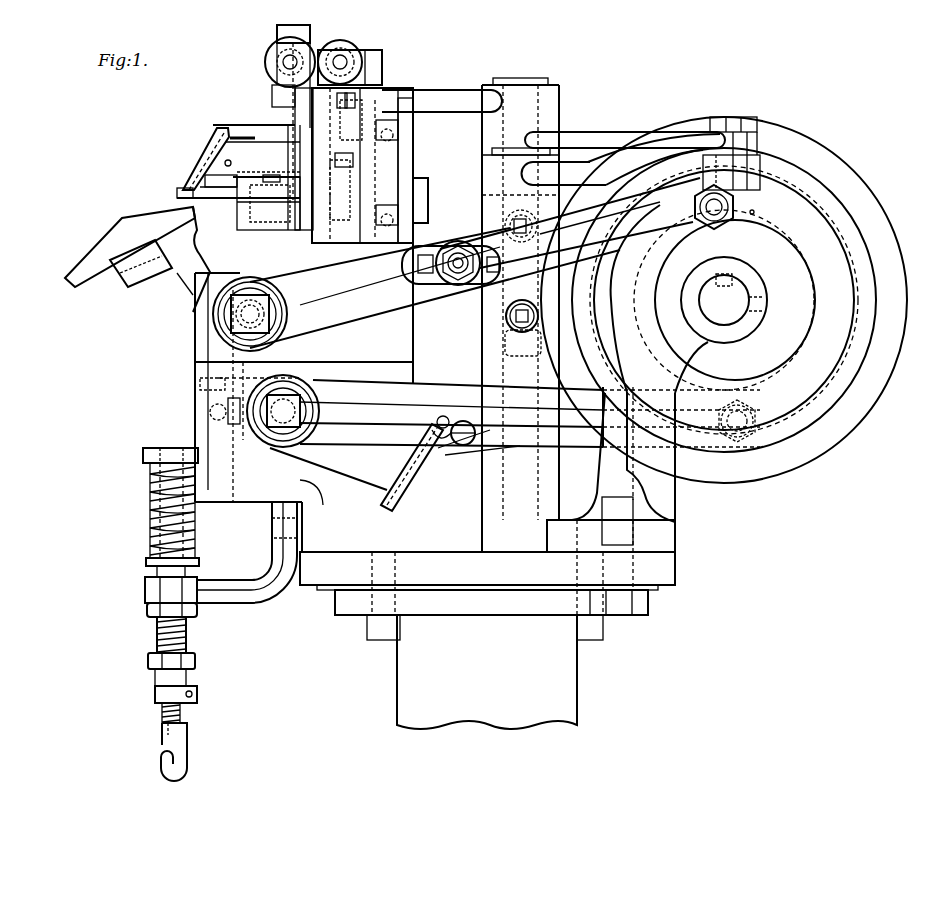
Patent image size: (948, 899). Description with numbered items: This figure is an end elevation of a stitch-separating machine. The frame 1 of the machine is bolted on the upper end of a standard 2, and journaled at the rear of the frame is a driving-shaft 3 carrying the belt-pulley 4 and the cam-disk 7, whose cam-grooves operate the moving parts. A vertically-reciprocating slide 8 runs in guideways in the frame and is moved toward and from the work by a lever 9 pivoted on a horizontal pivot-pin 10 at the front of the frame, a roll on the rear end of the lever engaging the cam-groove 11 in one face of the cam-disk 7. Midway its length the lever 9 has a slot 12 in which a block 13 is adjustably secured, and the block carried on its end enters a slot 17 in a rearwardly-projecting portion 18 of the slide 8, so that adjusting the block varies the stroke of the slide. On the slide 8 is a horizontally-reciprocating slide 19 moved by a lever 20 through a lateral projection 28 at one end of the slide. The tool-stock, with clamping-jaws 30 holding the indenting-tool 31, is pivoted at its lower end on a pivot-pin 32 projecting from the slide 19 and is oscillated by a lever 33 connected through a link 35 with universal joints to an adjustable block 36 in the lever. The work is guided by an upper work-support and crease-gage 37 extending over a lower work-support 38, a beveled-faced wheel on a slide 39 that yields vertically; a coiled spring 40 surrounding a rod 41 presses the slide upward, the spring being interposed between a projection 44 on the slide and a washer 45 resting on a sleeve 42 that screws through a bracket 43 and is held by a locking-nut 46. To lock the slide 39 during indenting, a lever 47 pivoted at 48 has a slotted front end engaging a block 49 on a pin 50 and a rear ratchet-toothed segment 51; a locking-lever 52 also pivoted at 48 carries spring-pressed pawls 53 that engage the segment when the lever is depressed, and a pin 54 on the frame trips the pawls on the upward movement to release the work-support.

The frame 1 is at (672, 566).
The standard 2 is at (575, 672).
The driving-shaft 3 is at (724, 300).
The belt-pulley 4 is at (888, 377).
The cam-disk 7 is at (873, 284).
The vertically-reciprocating slide 8 is at (396, 152).
The lever 9 is at (596, 215).
The pivot-pin 10 is at (238, 312).
The cam-groove 11 is at (740, 212).
The slot 12 is at (427, 248).
The block 13 is at (456, 276).
The slot 17 is at (496, 283).
The rearwardly-projecting portion 18 is at (466, 290).
The horizontally-reciprocating slide 19 is at (353, 160).
The lever 20 is at (623, 159).
The lateral projection 28 is at (425, 201).
The clamping-jaws 30 is at (254, 131).
The indenting-tool 31 is at (216, 130).
The pivot-pin 32 is at (200, 225).
The lever 33 is at (444, 90).
The link 35 is at (326, 56).
The block 36 is at (348, 97).
The upper work-support and crease-gage 37 is at (182, 192).
The lower work-support 38 is at (88, 256).
The slide 39 is at (168, 278).
The coiled spring 40 is at (150, 505).
The rod 41 is at (196, 514).
The sleeve 42 is at (187, 631).
The bracket 43 is at (290, 586).
The projection 44 is at (145, 452).
The washer 45 is at (200, 563).
The locking-nut 46 is at (145, 610).
The lever 47 is at (436, 442).
The pivot 48 is at (302, 406).
The block 49 is at (208, 400).
The pin 50 is at (210, 412).
The ratchet-toothed segment 51 is at (418, 485).
The locking-lever 52 is at (545, 440).
The spring-pressed pawl 53 is at (452, 455).
The pin 54 is at (443, 416).